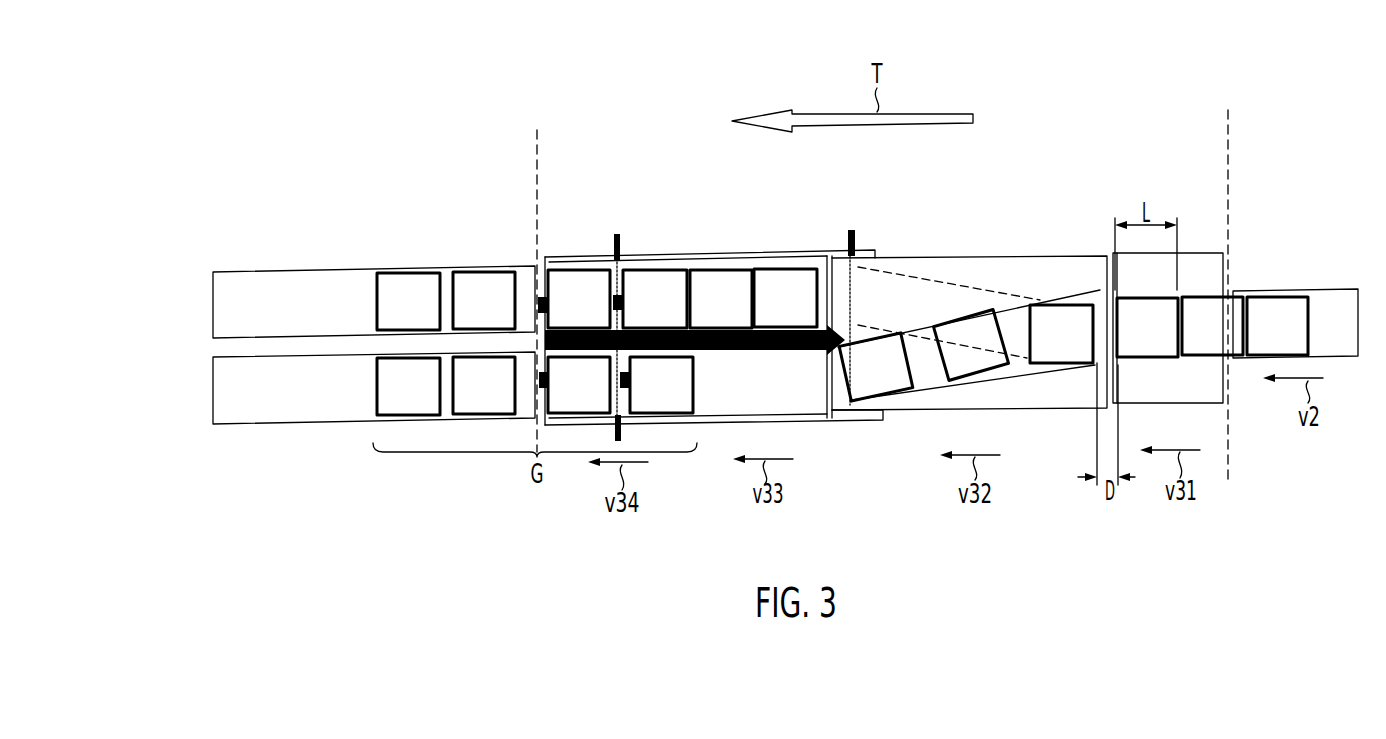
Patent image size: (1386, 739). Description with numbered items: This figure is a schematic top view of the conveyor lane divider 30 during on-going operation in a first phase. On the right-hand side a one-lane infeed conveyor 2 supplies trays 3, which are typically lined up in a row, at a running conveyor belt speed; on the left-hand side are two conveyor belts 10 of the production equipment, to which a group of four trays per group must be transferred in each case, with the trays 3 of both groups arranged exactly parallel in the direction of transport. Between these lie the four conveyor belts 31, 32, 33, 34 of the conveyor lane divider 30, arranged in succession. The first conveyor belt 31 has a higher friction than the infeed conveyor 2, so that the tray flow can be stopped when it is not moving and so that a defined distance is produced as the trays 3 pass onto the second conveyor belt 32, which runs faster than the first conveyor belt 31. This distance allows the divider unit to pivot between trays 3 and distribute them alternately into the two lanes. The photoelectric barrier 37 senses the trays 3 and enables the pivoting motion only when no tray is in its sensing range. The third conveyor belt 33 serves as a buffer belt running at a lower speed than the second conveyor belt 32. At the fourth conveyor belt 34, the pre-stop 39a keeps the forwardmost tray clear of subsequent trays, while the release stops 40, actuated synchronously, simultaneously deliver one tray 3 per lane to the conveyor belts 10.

The infeed conveyor 2 is at (1345, 302).
The tray 3 is at (1277, 313).
The conveyor belt 10 is at (215, 288).
The conveyor lane divider 30 is at (1092, 107).
The first conveyor belt 31 is at (1203, 262).
The second conveyor belt 32 is at (1017, 267).
The third conveyor belt 33 is at (811, 398).
The fourth conveyor belt 34 is at (605, 322).
The divider sensor 37 is at (856, 242).
The pre-stop 39a is at (618, 270).
The release stop 40 is at (537, 298).